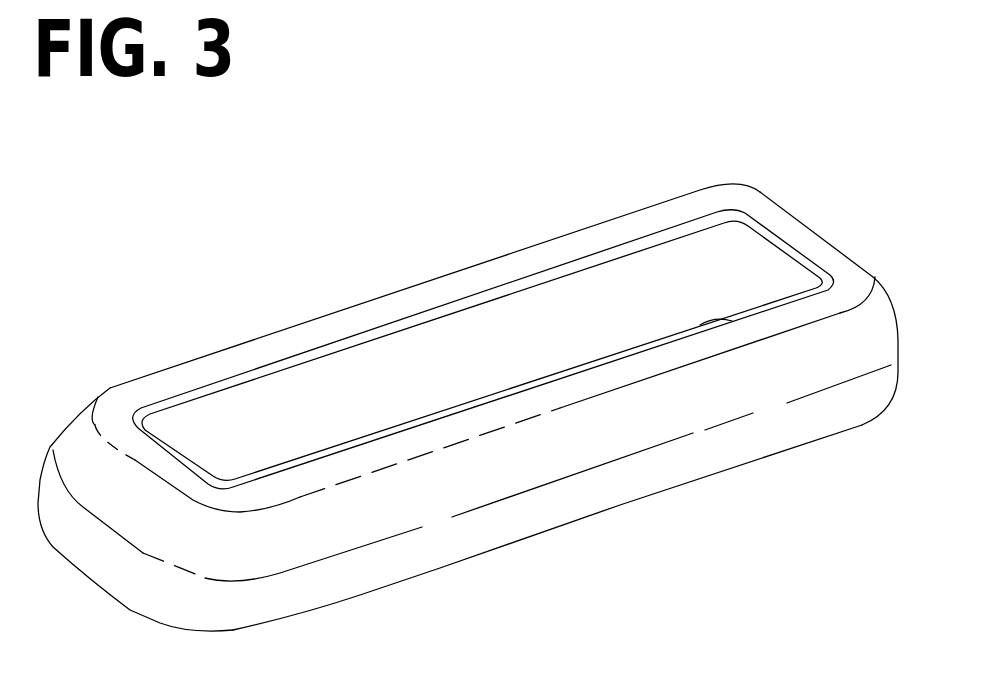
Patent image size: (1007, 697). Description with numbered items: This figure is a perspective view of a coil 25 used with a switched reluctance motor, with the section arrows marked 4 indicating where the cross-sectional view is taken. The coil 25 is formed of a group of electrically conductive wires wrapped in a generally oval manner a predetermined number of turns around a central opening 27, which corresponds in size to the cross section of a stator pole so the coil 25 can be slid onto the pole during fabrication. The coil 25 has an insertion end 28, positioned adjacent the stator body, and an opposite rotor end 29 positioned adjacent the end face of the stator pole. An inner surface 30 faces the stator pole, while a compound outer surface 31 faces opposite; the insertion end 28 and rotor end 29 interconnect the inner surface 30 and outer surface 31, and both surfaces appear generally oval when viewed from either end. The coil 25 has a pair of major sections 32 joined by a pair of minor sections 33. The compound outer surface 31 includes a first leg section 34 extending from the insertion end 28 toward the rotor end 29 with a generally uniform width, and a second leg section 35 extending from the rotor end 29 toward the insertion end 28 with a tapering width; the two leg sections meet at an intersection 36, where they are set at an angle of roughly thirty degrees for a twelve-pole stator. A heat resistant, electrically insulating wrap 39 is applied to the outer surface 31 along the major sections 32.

The coil 25 is at (699, 85).
The central opening 27 is at (745, 235).
The insertion end 28 is at (322, 612).
The rotor end 29 is at (458, 287).
The inner surface 30 is at (617, 268).
The compound outer surface 31 is at (835, 412).
The major sections 32 is at (535, 517).
The minor sections 33 is at (839, 260).
The first leg section 34 is at (663, 468).
The second leg section 35 is at (728, 397).
The intersection 36 is at (422, 527).
The insulating wrap 39 is at (703, 191).
The section line 4- 4 is at (352, 275).